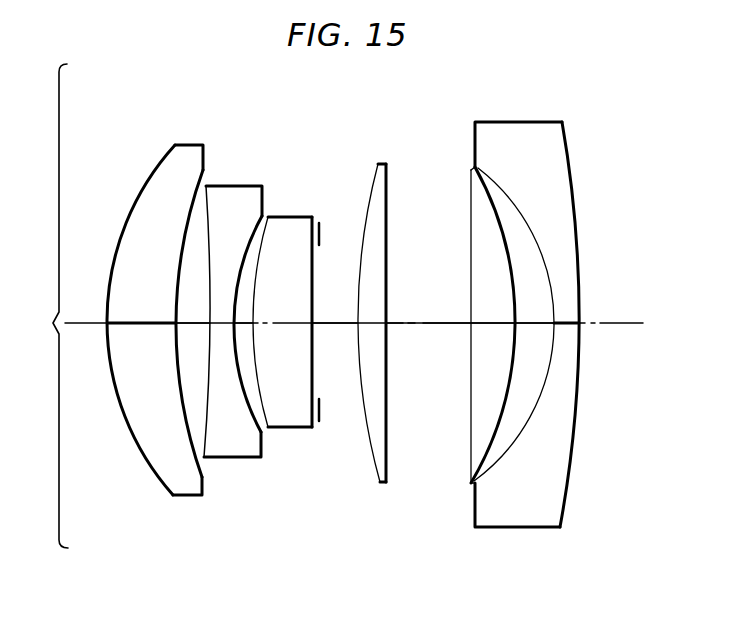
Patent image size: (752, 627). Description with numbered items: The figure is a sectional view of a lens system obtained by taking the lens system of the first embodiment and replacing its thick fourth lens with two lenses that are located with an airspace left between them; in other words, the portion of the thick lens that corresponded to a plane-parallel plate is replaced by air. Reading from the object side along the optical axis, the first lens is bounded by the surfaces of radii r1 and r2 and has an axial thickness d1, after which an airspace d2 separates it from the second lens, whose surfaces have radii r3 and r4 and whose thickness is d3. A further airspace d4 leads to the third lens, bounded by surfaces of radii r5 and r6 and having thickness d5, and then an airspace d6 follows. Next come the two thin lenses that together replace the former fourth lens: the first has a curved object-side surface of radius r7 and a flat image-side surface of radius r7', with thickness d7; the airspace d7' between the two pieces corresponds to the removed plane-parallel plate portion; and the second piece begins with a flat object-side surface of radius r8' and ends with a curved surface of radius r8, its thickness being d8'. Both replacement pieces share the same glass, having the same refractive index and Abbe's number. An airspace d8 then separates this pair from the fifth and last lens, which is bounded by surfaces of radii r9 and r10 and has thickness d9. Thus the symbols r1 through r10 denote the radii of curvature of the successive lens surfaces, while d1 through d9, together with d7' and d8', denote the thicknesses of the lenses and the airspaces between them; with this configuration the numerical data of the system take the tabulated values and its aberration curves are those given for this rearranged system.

The radius of curvature of first lens surface r1 is at (167, 150).
The radius of curvature of second lens surface r2 is at (193, 172).
The radius of curvature of third lens surface r3 is at (217, 196).
The radius of curvature of fourth lens surface r4 is at (253, 214).
The radius of curvature of fifth lens surface r5 is at (272, 225).
The radius of curvature of sixth lens surface r6 is at (314, 222).
The radius of curvature of seventh lens surface r7 is at (369, 286).
The radius of curvature of plane surface of first replacement lens r7' is at (398, 299).
The radius of curvature of plane surface of second replacement lens r8' is at (446, 312).
The radius of curvature of eighth lens surface r8 is at (477, 294).
The radius of curvature of ninth lens surface r9 is at (493, 178).
The radius of curvature of tenth lens surface r10 is at (564, 138).
The thickness of first lens d1 is at (137, 323).
The airspace between first and second lenses d2 is at (195, 323).
The thickness of second lens d3 is at (225, 323).
The airspace between second and third lenses d4 is at (240, 323).
The thickness of third lens d5 is at (280, 323).
The airspace between third lens and first replacement lens d6 is at (333, 323).
The thickness of first replacement lens d7 is at (400, 323).
The airspace replacing plane-parallel plate portion d7' is at (428, 353).
The thickness of second replacement lens d8' is at (493, 325).
The airspace between second replacement lens and fifth lens d8 is at (534, 354).
The thickness of fifth lens d9 is at (563, 323).